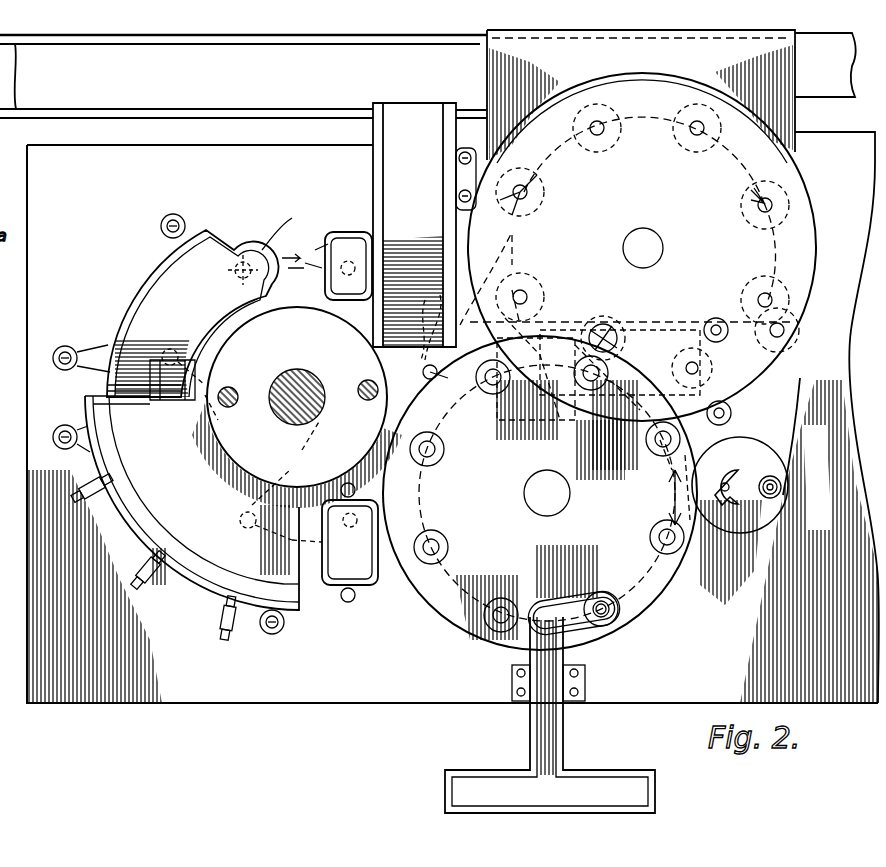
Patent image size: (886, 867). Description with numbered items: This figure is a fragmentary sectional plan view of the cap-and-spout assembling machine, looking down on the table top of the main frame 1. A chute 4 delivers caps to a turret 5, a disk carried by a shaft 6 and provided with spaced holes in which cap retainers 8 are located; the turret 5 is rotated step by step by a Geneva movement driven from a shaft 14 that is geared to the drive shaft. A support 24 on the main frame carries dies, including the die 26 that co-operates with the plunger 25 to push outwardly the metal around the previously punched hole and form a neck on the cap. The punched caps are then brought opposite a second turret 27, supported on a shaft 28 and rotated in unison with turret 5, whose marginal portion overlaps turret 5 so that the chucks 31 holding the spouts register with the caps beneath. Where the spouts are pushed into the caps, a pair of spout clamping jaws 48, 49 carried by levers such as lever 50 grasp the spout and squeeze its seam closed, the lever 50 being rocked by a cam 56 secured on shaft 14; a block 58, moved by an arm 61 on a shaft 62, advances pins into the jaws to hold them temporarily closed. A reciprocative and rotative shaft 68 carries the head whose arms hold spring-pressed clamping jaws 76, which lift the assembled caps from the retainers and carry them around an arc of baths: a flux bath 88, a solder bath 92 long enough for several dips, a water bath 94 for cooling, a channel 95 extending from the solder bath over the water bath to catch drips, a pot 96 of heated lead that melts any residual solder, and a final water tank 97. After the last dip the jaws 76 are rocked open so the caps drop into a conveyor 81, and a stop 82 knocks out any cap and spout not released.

The main frame 1 is at (290, 685).
The chute 4 is at (530, 733).
The turret 5 is at (540, 493).
The shaft 6 is at (535, 500).
The cap retainer 8 is at (445, 460).
The shaft 14 is at (722, 478).
The support 24 is at (574, 604).
The plunger 25 is at (625, 598).
The die 26 is at (484, 618).
The turret 27 is at (798, 280).
The shaft 28 is at (660, 250).
The chuck 31 is at (545, 196).
The spout clamping jaw 48 is at (603, 320).
The spout clamping jaw 49 is at (640, 430).
The lever 50 is at (670, 326).
The cam 56 is at (765, 476).
The block 58 is at (545, 330).
The arm 61 is at (444, 328).
The shaft 62 is at (624, 214).
The shaft 68 is at (296, 380).
The clamping jaw 76 is at (238, 258).
The conveyor 81 is at (427, 188).
The stop 82 is at (422, 373).
The flux bath 88 is at (372, 588).
The solder bath 92 is at (212, 605).
The water bath 94 is at (132, 298).
The channel 95 is at (95, 381).
The lead pot 96 is at (281, 223).
The water tank 97 is at (343, 242).